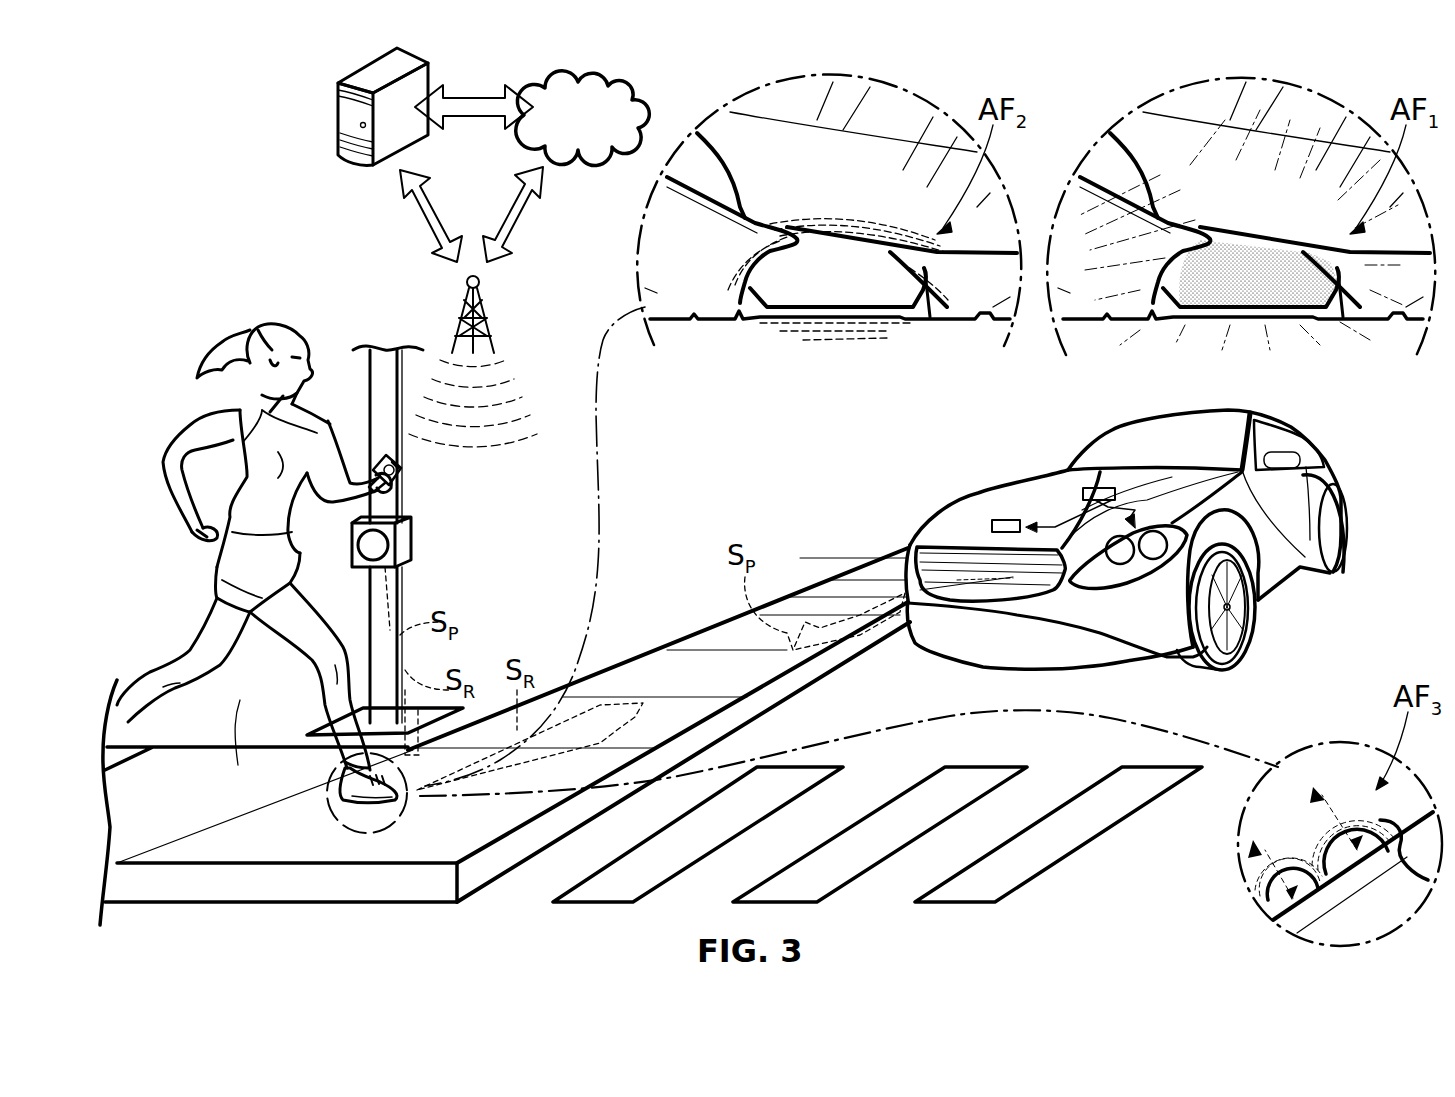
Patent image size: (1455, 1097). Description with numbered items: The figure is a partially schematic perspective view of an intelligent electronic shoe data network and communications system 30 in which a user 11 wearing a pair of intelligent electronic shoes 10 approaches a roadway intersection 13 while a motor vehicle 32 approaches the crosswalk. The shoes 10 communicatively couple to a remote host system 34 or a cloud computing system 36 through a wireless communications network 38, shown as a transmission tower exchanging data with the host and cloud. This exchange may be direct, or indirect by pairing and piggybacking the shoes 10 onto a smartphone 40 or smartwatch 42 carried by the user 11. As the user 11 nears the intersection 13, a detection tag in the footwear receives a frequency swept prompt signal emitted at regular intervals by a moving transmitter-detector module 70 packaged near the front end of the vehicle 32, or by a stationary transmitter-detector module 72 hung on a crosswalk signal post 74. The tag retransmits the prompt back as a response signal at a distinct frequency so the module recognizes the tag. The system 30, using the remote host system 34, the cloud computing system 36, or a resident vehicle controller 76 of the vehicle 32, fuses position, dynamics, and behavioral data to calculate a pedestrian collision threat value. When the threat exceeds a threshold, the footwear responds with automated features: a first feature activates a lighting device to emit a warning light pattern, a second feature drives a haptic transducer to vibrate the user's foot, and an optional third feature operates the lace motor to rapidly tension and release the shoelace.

The intelligent electronic shoe 10 is at (438, 820).
The user 11 is at (226, 420).
The roadway intersection 13 is at (617, 302).
The IES data network and communications system 30 is at (305, 70).
The motor vehicle 32 is at (1119, 419).
The remote host system 34 is at (417, 73).
The cloud computing system 36 is at (596, 100).
The wireless communications network 38 is at (462, 320).
The smartphone 40 is at (385, 455).
The smartwatch 42 is at (402, 507).
The moving transmitter-detector module 70 is at (995, 520).
The stationary transmitter-detector module 72 is at (413, 527).
The crosswalk signal post 74 is at (406, 571).
The resident vehicle controller 76 is at (1088, 488).